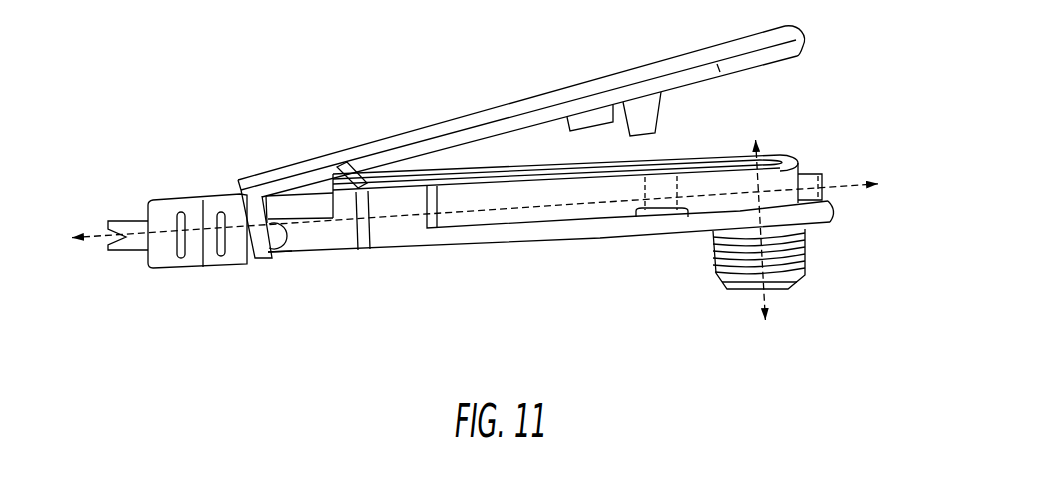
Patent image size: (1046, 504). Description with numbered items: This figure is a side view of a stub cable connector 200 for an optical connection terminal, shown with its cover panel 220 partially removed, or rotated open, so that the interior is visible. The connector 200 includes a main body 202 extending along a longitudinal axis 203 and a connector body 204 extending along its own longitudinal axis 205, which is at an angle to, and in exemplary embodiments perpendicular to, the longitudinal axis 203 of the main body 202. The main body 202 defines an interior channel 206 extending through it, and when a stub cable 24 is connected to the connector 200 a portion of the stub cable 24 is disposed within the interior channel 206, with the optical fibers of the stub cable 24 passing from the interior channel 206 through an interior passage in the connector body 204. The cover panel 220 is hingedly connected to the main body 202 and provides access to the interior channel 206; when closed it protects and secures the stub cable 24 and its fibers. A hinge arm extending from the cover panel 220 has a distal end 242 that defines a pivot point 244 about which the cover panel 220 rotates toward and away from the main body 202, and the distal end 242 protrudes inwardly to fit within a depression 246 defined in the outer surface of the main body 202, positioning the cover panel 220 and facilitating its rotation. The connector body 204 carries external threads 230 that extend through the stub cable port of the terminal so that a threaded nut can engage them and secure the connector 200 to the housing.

The stub cable connector 200 is at (195, 152).
The cover panel 220 is at (445, 118).
The main body 202 is at (400, 247).
The longitudinal axis 203 is at (860, 181).
The connector body 204 is at (699, 263).
The longitudinal axis 205 is at (768, 298).
The interior channel 206 is at (657, 157).
The external threads 230 is at (254, 207).
The stub cable 24 is at (127, 246).
The distal end 242 is at (273, 250).
The pivot point 244 is at (266, 246).
The depression 246 is at (293, 257).